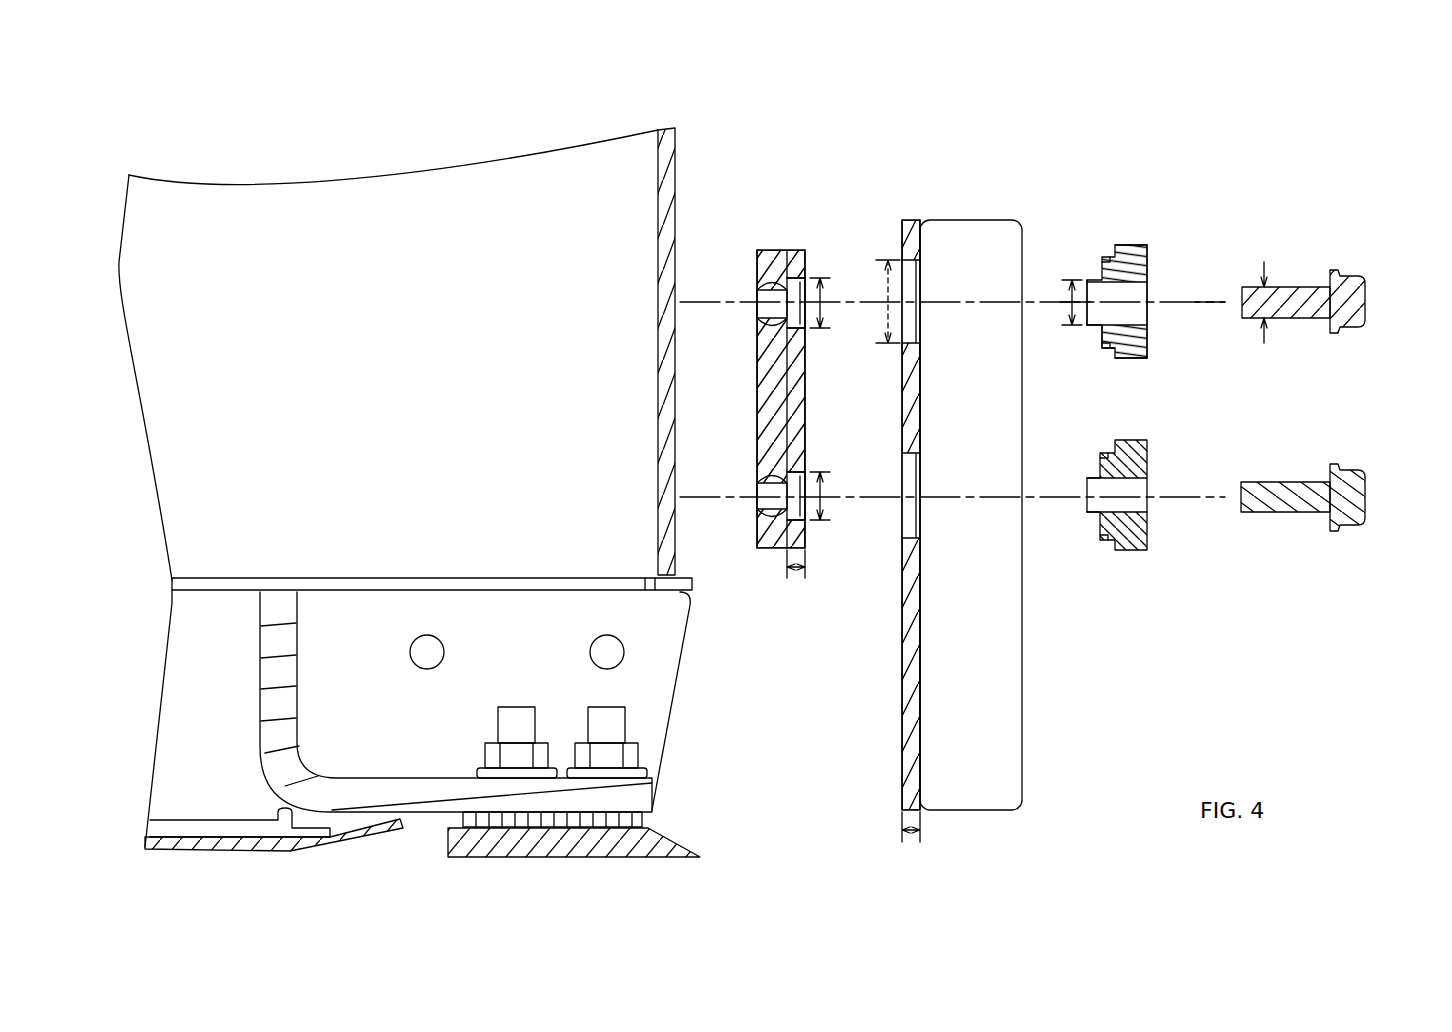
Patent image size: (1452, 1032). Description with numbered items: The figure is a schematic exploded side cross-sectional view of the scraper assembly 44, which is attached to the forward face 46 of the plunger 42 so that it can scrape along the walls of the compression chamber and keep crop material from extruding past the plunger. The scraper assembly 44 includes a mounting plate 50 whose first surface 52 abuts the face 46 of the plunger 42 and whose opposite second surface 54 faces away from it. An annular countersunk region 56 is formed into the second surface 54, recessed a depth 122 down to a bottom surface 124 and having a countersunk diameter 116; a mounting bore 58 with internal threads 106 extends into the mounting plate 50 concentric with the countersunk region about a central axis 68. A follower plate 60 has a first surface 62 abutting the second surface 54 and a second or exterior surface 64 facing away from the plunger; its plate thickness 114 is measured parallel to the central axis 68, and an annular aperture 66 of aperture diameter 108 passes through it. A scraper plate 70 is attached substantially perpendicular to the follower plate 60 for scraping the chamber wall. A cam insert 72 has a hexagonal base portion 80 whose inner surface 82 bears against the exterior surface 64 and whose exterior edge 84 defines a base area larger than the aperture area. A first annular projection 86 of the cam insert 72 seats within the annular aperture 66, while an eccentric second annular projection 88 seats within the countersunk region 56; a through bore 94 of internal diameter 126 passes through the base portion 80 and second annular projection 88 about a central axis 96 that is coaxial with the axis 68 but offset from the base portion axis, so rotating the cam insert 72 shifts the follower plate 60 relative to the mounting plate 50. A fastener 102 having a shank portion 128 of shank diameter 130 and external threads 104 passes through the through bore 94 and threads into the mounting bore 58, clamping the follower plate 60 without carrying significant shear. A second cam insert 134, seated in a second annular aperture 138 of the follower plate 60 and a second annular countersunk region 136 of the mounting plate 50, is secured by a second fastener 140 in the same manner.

The plunger 42 is at (279, 185).
The scraper assembly 44 is at (937, 475).
The forward face 46 is at (675, 147).
The mounting plate 50 is at (778, 372).
The first surface 52 is at (757, 252).
The second surface 54 is at (804, 262).
The annular countersunk region 56 is at (765, 288).
The mounting bore 58 is at (768, 295).
The follower plate 60 is at (896, 501).
The first surface 62 is at (903, 232).
The second or exterior surface 64 is at (920, 232).
The annular aperture 66 is at (916, 262).
The central axis 68 is at (700, 303).
The scraper plate 70 is at (972, 481).
The cam insert 72 is at (1132, 293).
The base portion 80 is at (1125, 245).
The inner surface 82 is at (1113, 356).
The exterior edge 84 is at (1130, 360).
The first annular projection 86 is at (1100, 340).
The second annular projection 88 is at (1087, 283).
The through bore 94 is at (1130, 290).
The central axis 96 is at (1213, 310).
The fastener 102 is at (1345, 324).
The external threads 104 is at (1298, 320).
The internal threads 106 is at (775, 316).
The aperture diameter 108 is at (887, 282).
The plate thickness 114 is at (912, 848).
The countersunk diameter 116 is at (823, 312).
The depth 122 is at (796, 572).
The bottom surface 124 is at (792, 335).
The internal diameter 126 is at (1063, 306).
The shank portion 128 is at (1295, 287).
The shank diameter 130 is at (1264, 345).
The second cam insert 134 is at (1135, 570).
The second annular countersunk region 136 is at (780, 515).
The second annular aperture 138 is at (915, 535).
The second fastener 140 is at (1368, 497).